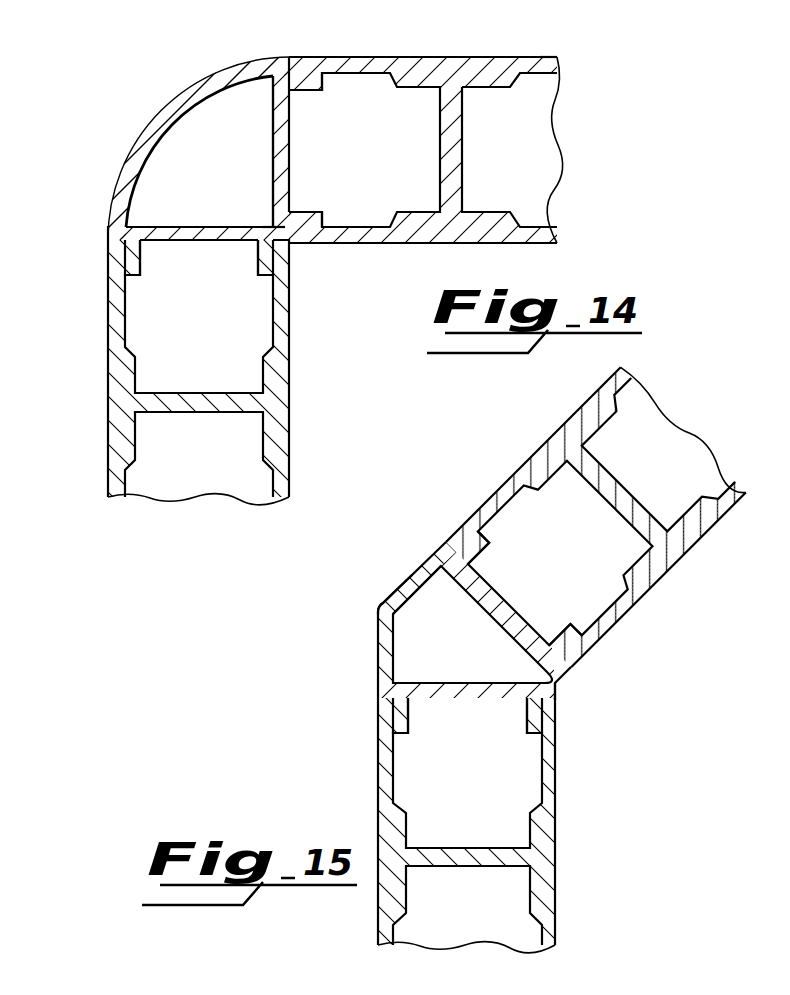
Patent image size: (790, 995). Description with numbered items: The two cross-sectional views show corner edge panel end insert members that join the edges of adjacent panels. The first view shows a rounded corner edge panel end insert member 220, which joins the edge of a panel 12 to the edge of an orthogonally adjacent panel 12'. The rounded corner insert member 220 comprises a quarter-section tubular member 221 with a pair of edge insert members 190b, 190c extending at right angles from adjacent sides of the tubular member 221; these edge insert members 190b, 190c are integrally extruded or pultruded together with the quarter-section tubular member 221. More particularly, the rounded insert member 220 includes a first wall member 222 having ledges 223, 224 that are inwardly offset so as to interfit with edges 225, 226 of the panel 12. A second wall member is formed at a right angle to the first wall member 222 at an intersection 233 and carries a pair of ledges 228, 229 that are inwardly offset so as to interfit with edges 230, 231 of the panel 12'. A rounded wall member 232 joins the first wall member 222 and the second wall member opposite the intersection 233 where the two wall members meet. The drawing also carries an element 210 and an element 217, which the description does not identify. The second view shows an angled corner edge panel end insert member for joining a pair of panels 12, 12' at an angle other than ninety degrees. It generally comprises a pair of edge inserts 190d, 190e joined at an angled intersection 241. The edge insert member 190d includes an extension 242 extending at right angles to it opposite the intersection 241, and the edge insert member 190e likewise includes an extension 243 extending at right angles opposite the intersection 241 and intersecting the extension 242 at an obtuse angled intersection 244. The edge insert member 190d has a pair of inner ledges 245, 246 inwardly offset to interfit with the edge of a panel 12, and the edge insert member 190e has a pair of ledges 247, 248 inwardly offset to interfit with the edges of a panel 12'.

In FIG. 14, the panel 12 is at (173, 372).
In FIG. 15, the panel 12 is at (420, 818).
In FIG. 14, the orthogonally adjacent panel 12' is at (426, 124).
In FIG. 15, the orthogonally adjacent panel 12' is at (598, 516).
In FIG. 14, the frame assembly 210 is at (688, 0).
In FIG. 14, the rounded corner edge panel end insert member 220 is at (165, 90).
In FIG. 14, the quarter-section tubular member 221 is at (124, 165).
In FIG. 14, the rounded wall member 232 is at (228, 72).
In FIG. 14, the edge of panel 12' 230 is at (283, 62).
In FIG. 15, the edge of panel 12' 230 is at (390, 580).
In FIG. 14, the transverse wall 217 is at (278, 116).
In FIG. 14, the first wall member 222 is at (215, 229).
In FIG. 14, the edge of panel 12' 231 is at (277, 223).
In FIG. 14, the intersection 233 is at (287, 251).
In FIG. 14, the edge of panel 12 225 is at (113, 232).
In FIG. 14, the edge of panel 12 226 is at (255, 246).
In FIG. 14, the ledge 223 is at (142, 273).
In FIG. 14, the ledge 224 is at (253, 271).
In FIG. 14, the ledge 228 is at (327, 76).
In FIG. 14, the ledge 229 is at (323, 217).
In FIG. 14, the edge insert member 190b is at (190, 248).
In FIG. 14, the edge insert member 190c is at (293, 167).
In FIG. 15, the edge insert 190d is at (470, 704).
In FIG. 15, the edge insert 190e is at (504, 593).
In FIG. 15, the extension 242 is at (387, 638).
In FIG. 15, the extension 243 is at (420, 568).
In FIG. 15, the obtuse angled intersection 244 is at (381, 601).
In FIG. 15, the angled intersection 241 is at (562, 685).
In FIG. 15, the inner ledge 245 is at (410, 721).
In FIG. 15, the inner ledge 246 is at (522, 721).
In FIG. 15, the ledge 247 is at (483, 540).
In FIG. 15, the ledge 248 is at (560, 636).